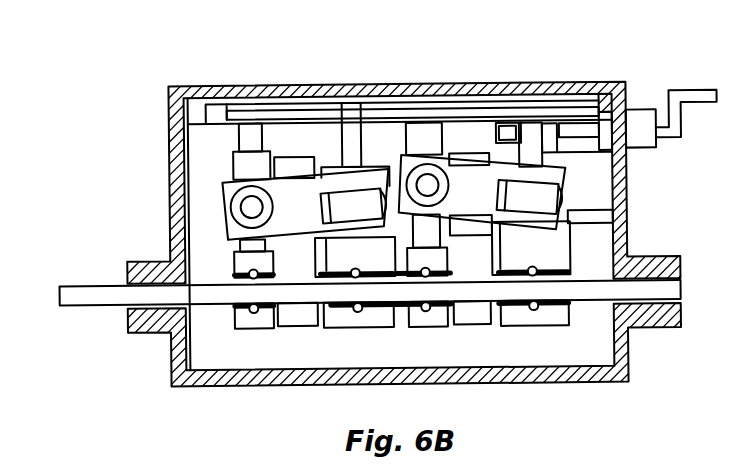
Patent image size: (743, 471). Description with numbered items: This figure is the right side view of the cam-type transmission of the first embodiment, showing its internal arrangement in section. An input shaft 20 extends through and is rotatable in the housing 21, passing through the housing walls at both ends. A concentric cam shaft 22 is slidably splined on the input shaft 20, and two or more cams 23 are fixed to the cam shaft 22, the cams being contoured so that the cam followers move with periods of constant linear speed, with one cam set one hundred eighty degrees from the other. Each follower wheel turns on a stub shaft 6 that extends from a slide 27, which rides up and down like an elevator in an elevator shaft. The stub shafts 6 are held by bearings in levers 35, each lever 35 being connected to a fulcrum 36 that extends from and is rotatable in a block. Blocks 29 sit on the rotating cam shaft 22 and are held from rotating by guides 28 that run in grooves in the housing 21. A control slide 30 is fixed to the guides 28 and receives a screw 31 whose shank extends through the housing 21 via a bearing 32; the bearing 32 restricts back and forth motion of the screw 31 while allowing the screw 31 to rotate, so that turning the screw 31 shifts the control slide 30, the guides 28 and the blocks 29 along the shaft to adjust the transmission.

The stub shaft 6 is at (248, 205).
The input shaft 20 is at (95, 289).
The housing 21 is at (188, 84).
The cam shaft 22 is at (245, 260).
The cam 23 is at (297, 317).
The slide 27 is at (245, 155).
The guide 28 is at (250, 113).
The block 29 is at (242, 326).
The control slide 30 is at (466, 99).
The screw 31 is at (585, 132).
The bearing 32 is at (643, 128).
The lever 35 is at (235, 189).
The fulcrum 36 is at (355, 203).